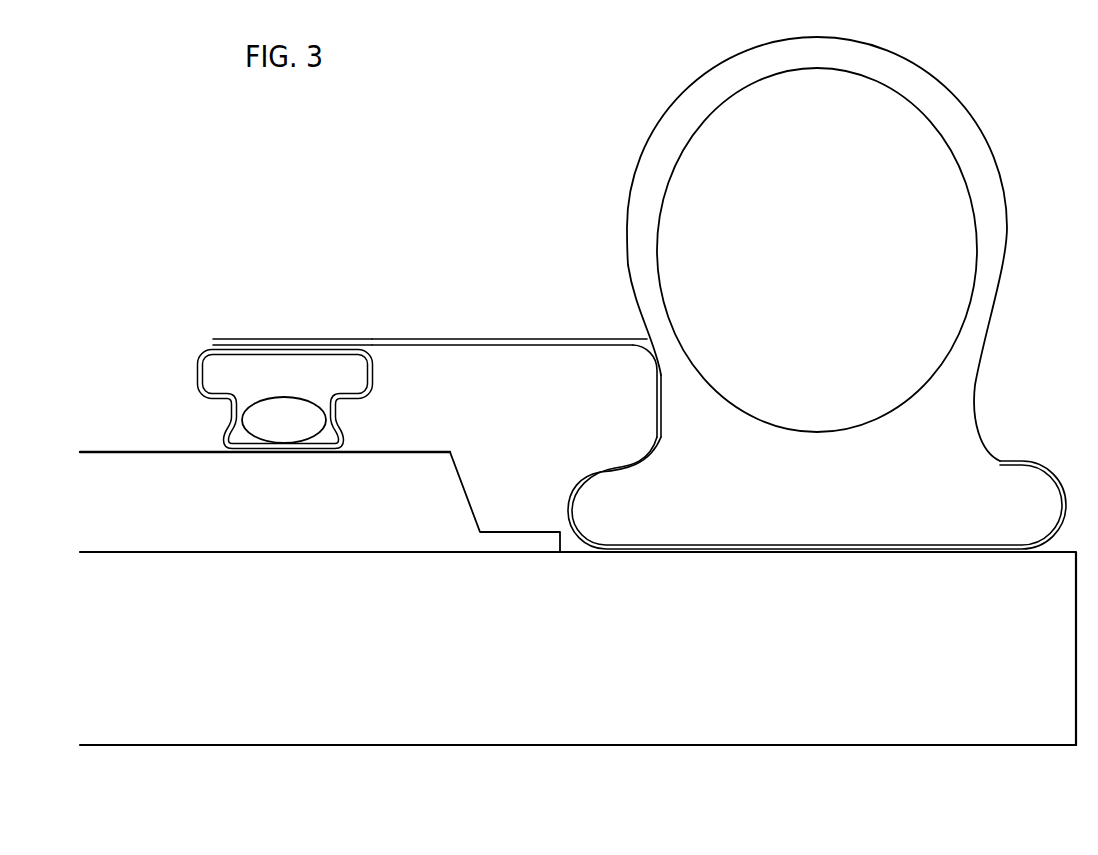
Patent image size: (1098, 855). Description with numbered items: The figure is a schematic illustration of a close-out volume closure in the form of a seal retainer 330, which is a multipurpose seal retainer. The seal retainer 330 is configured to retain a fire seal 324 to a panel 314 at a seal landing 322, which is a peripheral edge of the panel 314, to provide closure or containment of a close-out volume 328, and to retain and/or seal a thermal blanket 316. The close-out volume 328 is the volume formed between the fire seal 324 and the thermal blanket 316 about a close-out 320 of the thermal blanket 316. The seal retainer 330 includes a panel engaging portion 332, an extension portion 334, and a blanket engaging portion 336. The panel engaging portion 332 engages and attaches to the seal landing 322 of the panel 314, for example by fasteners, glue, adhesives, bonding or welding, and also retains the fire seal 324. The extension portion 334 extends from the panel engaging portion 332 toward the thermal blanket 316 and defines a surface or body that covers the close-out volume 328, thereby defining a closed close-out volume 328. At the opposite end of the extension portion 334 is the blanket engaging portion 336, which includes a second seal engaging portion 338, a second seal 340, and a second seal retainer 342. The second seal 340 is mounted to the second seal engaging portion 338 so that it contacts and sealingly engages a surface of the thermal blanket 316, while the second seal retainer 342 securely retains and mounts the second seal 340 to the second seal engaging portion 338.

The panel 314 is at (327, 723).
The thermal blanket 316 is at (145, 478).
The close-out 320 is at (520, 543).
The seal landing 322 is at (845, 635).
The fire seal 324 is at (950, 388).
The close-out volume 328 is at (440, 381).
The seal retainer 330 is at (719, 293).
The panel engaging portion 332 is at (837, 547).
The extension portion 334 is at (473, 338).
The blanket engaging portion 336 is at (274, 362).
The second seal engaging portion 338 is at (273, 338).
The second seal 340 is at (330, 438).
The second seal retainer 342 is at (196, 371).